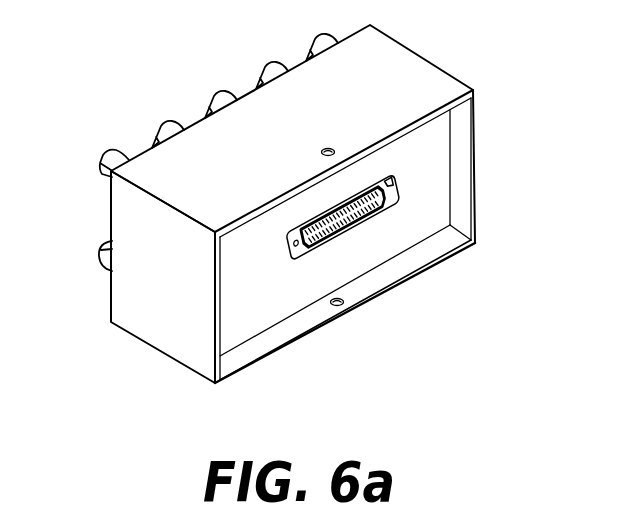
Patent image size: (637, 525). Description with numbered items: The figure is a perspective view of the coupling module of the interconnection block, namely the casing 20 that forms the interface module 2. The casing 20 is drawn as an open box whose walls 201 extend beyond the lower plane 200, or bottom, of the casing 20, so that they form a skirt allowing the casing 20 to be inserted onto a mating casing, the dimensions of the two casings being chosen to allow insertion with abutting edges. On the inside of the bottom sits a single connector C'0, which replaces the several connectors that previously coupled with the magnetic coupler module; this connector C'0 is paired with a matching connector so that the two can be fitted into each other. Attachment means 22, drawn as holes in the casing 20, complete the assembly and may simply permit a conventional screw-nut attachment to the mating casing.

The interface module 2 is at (309, 214).
The casing 20 is at (414, 64).
The attachment means 22 is at (330, 148).
The lower plane 200 is at (437, 165).
The walls 201 is at (456, 255).
The connector C'0 is at (319, 238).